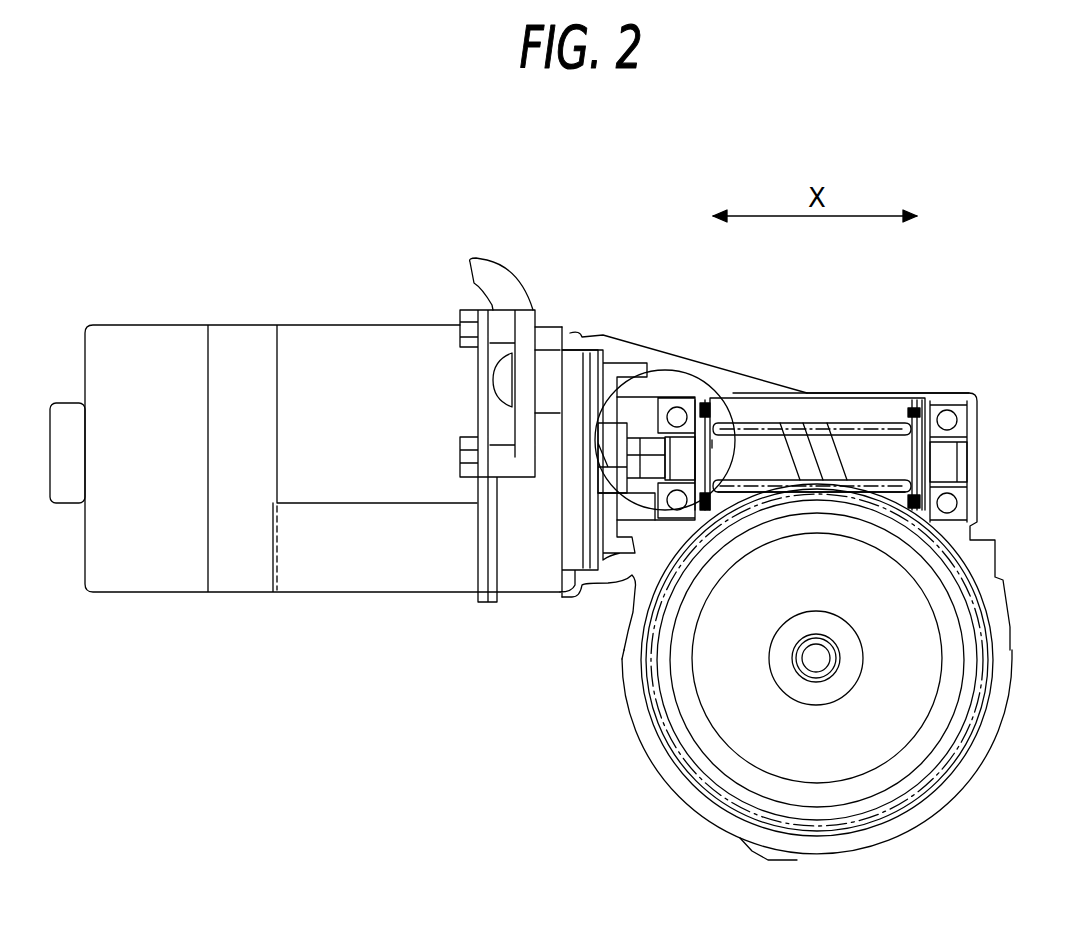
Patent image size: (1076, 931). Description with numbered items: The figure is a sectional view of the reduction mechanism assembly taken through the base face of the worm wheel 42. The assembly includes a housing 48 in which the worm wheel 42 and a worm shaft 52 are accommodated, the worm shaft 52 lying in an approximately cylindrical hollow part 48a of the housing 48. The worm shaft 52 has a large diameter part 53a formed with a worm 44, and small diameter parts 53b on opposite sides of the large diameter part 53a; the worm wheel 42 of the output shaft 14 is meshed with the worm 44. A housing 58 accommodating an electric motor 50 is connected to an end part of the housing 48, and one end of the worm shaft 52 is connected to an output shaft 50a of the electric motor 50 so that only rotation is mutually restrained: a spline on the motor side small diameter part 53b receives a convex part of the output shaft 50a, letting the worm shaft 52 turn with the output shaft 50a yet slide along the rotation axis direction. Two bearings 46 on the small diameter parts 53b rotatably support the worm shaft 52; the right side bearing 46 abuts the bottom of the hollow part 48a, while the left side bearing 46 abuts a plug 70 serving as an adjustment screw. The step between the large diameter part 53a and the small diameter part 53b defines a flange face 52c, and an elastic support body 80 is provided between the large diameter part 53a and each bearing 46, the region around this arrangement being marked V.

The output shaft 14 is at (812, 662).
The worm wheel 42 is at (902, 705).
The worm 44 is at (834, 436).
The bearing 46 is at (698, 398).
The housing 48 is at (836, 384).
The hollow part 48a is at (880, 415).
The electric motor 50 is at (420, 343).
The output shaft 50a is at (605, 418).
The worm shaft 52 is at (733, 440).
The flange face 52c is at (716, 440).
The large diameter part 53a is at (770, 480).
The small diameter part 53b is at (950, 462).
The housing 58 is at (370, 316).
The plug 70 is at (668, 408).
The elastic support body 80 is at (690, 414).
The detail region V is at (663, 370).